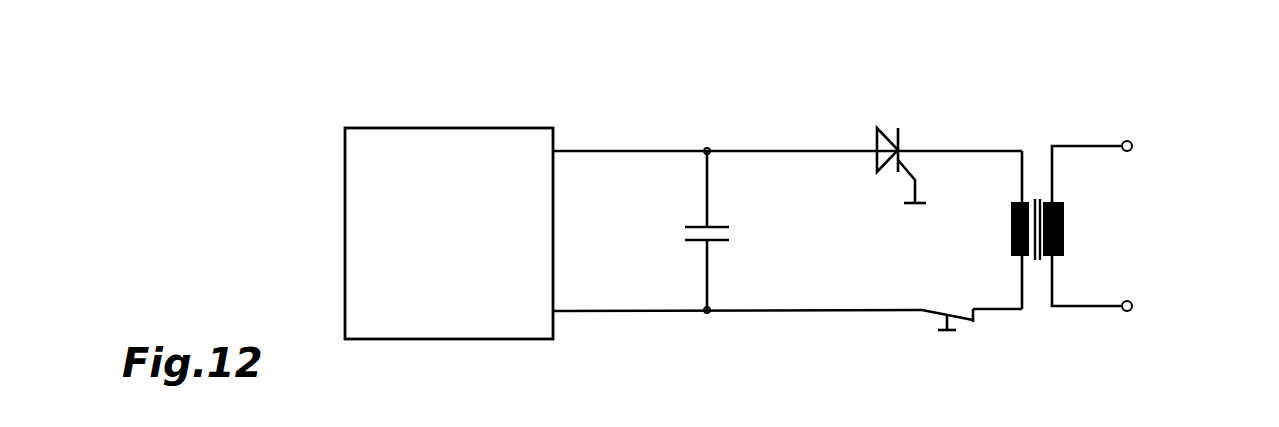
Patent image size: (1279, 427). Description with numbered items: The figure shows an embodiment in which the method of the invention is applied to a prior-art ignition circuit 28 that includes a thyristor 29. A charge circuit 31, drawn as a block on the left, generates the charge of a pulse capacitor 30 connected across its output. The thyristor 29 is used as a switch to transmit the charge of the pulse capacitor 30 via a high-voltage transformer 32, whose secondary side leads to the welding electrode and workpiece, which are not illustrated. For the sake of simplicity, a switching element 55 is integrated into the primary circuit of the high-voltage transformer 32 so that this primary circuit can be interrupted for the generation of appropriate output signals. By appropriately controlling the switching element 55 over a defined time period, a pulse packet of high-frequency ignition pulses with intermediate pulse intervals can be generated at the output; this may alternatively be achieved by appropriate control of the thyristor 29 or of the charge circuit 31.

The ignition circuit 28 is at (243, 152).
The thyristor 29 is at (924, 122).
The pulse capacitor 30 is at (742, 178).
The charge circuit 31 is at (453, 177).
The high-voltage transformer 32 is at (1115, 223).
The switching element 55 is at (882, 342).